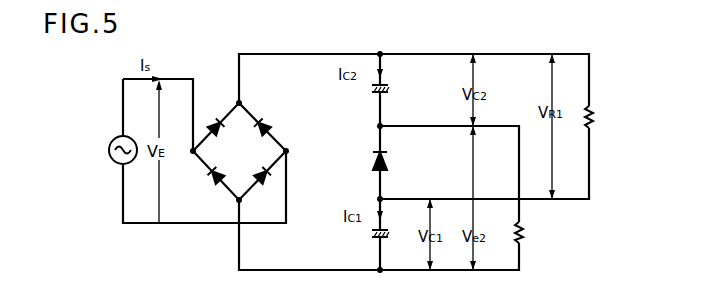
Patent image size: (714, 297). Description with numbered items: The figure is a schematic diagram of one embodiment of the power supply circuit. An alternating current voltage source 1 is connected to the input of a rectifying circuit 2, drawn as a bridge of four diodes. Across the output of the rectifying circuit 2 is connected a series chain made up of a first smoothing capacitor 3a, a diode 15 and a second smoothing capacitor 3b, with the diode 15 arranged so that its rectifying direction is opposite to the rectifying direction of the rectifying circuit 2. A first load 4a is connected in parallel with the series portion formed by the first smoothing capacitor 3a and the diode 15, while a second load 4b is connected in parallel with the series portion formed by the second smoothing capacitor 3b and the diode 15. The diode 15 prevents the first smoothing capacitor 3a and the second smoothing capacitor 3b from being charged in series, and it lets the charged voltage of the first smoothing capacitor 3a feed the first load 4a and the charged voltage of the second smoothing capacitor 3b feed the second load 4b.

The alternating current voltage source 1 is at (111, 144).
The rectifying circuit 2 is at (258, 107).
The first smoothing capacitor 3a is at (388, 84).
The second smoothing capacitor 3b is at (383, 228).
The first load 4a is at (597, 118).
The second load 4b is at (524, 233).
The diode 15 is at (388, 157).